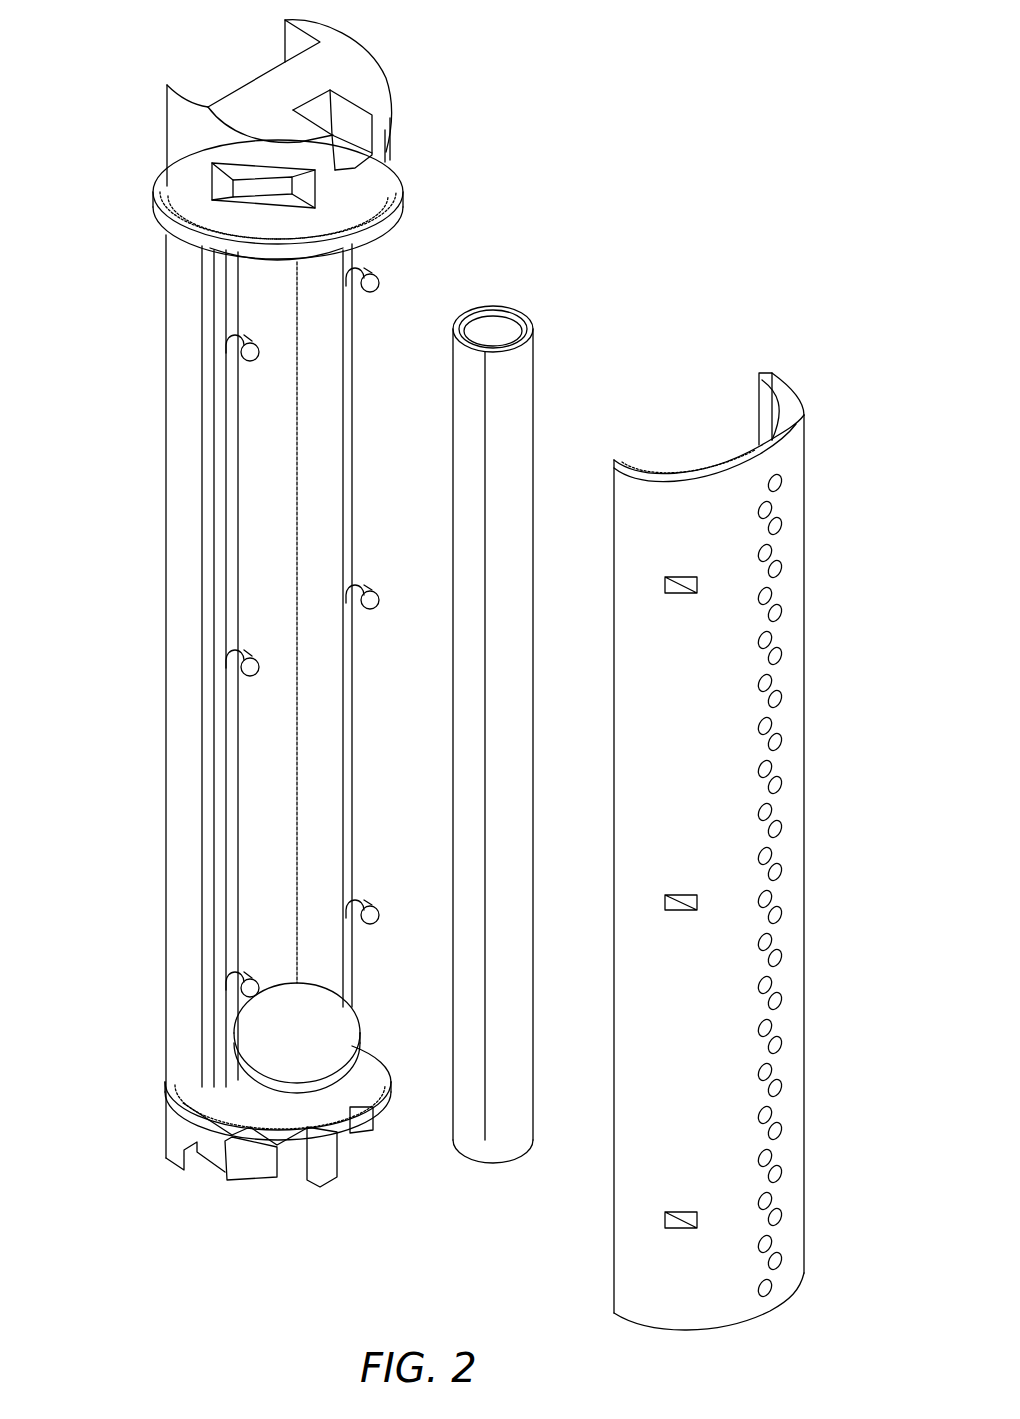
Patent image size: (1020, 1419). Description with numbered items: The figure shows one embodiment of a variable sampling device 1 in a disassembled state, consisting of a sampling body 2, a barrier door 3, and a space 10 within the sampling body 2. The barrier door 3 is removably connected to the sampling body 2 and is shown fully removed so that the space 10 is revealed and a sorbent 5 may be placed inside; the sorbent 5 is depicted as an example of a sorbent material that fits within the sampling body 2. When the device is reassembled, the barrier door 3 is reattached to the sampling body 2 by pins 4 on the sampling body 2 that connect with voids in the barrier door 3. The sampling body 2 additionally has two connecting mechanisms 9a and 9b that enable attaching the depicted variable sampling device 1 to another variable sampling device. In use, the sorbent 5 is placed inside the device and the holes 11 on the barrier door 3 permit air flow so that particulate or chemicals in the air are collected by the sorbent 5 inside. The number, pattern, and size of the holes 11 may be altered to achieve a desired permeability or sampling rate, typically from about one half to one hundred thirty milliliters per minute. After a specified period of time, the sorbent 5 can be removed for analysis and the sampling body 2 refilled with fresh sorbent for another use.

The variable sampling device 1 is at (563, 150).
The sampling body 2 is at (260, 505).
The barrier door 3 is at (662, 665).
The pins 4 is at (252, 666).
The sorbent 5 is at (515, 395).
The connecting mechanism 9a is at (177, 1130).
The connecting mechanism 9b is at (178, 122).
The space 10 is at (272, 765).
The holes 11 is at (770, 812).